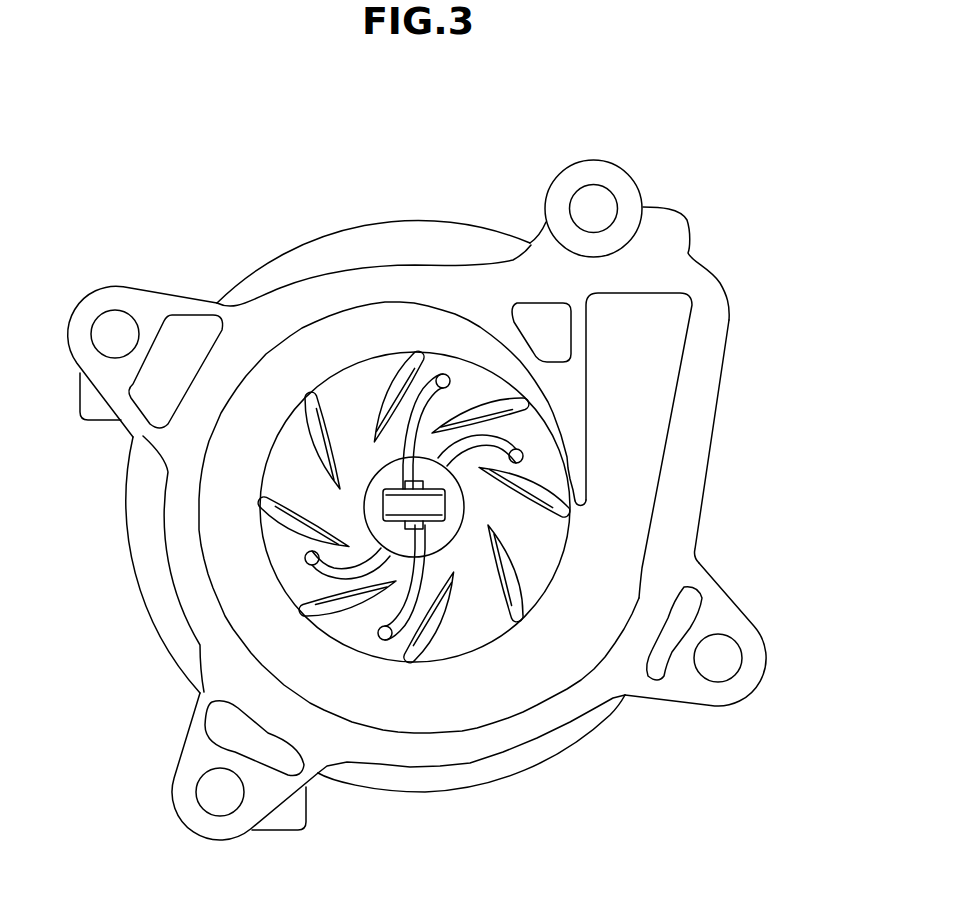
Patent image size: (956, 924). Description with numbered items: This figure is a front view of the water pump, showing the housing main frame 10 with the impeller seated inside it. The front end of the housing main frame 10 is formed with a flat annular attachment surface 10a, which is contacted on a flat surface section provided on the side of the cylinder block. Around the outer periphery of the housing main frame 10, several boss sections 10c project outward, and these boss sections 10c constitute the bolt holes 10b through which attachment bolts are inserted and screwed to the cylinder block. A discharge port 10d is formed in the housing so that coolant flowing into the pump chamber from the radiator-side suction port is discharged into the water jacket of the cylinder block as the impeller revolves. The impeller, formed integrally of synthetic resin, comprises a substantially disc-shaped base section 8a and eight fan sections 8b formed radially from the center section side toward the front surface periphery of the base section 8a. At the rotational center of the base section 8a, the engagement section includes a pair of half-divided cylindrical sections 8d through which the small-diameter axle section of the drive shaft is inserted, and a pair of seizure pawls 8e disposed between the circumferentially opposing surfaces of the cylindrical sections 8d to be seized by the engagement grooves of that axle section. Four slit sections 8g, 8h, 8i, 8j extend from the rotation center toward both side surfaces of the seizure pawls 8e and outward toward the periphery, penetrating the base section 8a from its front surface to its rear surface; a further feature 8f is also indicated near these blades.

The base section 8a is at (544, 530).
The fan sections 8b is at (397, 388).
The cylindrical sections 8d is at (368, 500).
The seizure pawls 8e is at (408, 480).
The blade rib 8f is at (478, 608).
The slit section 8g is at (440, 374).
The slit section 8h is at (311, 560).
The slit section 8i is at (385, 640).
The slit section 8j is at (524, 441).
The housing main frame 10 is at (731, 316).
The annular attachment surface 10a is at (702, 370).
The bolt holes 10b is at (602, 205).
The boss sections 10c is at (596, 174).
The discharge port 10d is at (657, 317).